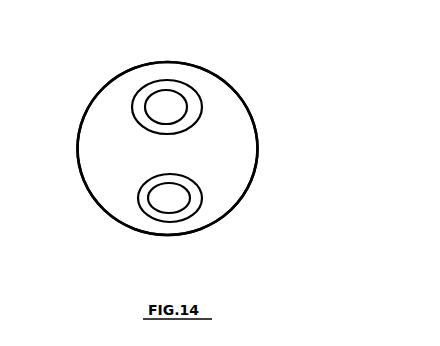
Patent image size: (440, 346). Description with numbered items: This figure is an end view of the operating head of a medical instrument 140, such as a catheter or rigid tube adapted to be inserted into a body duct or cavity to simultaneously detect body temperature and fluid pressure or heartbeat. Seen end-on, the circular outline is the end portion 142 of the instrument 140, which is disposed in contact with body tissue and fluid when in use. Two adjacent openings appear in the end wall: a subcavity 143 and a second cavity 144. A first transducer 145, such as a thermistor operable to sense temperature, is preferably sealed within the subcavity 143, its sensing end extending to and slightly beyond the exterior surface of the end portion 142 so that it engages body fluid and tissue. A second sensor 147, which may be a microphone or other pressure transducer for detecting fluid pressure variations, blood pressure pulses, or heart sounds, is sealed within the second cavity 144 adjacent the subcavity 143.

The medical instrument 140 is at (120, 65).
The end portion 142 is at (157, 160).
The subcavity 143 is at (195, 103).
The second cavity 144 is at (193, 202).
The first transducer 145 is at (160, 113).
The second sensor 147 is at (165, 202).